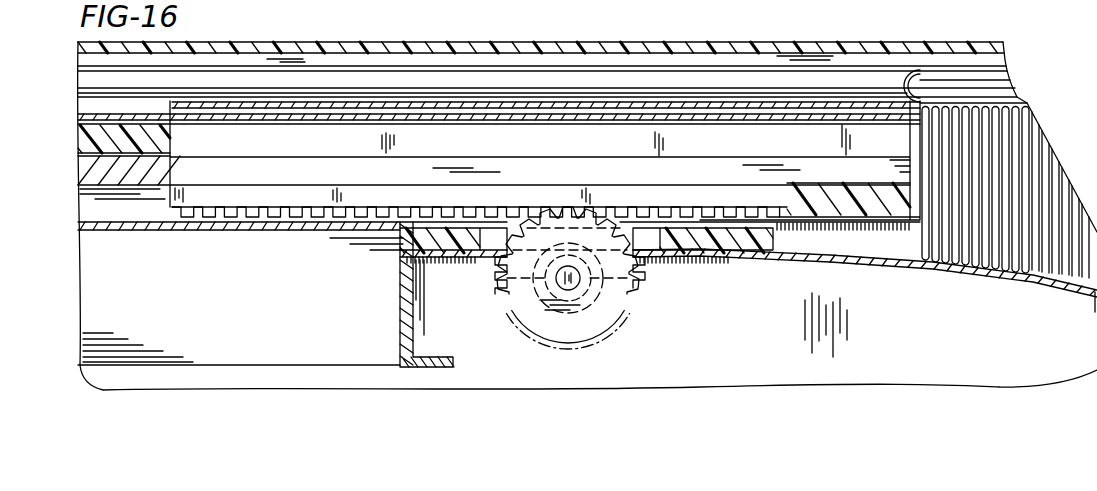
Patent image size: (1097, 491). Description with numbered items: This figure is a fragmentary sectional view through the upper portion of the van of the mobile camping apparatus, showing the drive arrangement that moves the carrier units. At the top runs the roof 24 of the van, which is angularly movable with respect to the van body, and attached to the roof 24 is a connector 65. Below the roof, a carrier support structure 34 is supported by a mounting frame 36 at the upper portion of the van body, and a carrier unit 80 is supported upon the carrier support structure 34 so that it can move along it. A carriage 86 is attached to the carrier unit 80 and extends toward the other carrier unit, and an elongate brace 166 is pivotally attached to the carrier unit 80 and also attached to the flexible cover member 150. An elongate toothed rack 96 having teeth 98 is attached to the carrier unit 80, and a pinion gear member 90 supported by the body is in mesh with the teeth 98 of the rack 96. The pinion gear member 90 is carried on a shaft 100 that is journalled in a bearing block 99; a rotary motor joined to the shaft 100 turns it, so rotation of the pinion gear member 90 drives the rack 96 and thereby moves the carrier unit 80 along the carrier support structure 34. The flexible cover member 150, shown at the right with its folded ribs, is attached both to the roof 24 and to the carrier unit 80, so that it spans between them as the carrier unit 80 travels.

The roof 24 is at (403, 40).
The connector 65 is at (457, 55).
The elongate brace 166 is at (315, 82).
The carriage 86 is at (695, 107).
The carrier unit 80 is at (867, 143).
The elongate toothed rack 96 is at (228, 206).
The teeth 98 is at (292, 208).
The bearing block 99 is at (503, 296).
The pinion gear member 90 is at (537, 327).
The shaft 100 is at (578, 280).
The carrier support structure 34 is at (783, 257).
The mounting frame 36 is at (1095, 293).
The flexible cover member 150 is at (1020, 97).